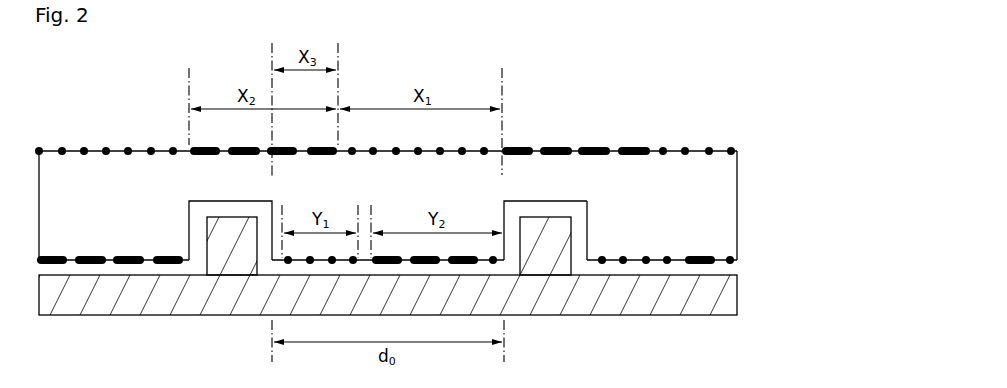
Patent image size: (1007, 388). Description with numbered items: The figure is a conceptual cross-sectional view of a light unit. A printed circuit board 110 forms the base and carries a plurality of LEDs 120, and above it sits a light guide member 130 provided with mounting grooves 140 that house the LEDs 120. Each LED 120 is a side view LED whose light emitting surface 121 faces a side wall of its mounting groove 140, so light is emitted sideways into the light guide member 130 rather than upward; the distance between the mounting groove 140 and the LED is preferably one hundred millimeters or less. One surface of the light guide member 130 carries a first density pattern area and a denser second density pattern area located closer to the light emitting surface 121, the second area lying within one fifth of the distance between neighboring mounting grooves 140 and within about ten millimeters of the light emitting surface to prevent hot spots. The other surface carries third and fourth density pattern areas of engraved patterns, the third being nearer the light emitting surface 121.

The printed circuit board 110 is at (737, 295).
The LED 120 is at (560, 230).
The light emitting surface 121 is at (578, 223).
The light guide member 130 is at (737, 218).
The mounting groove 140 is at (537, 207).